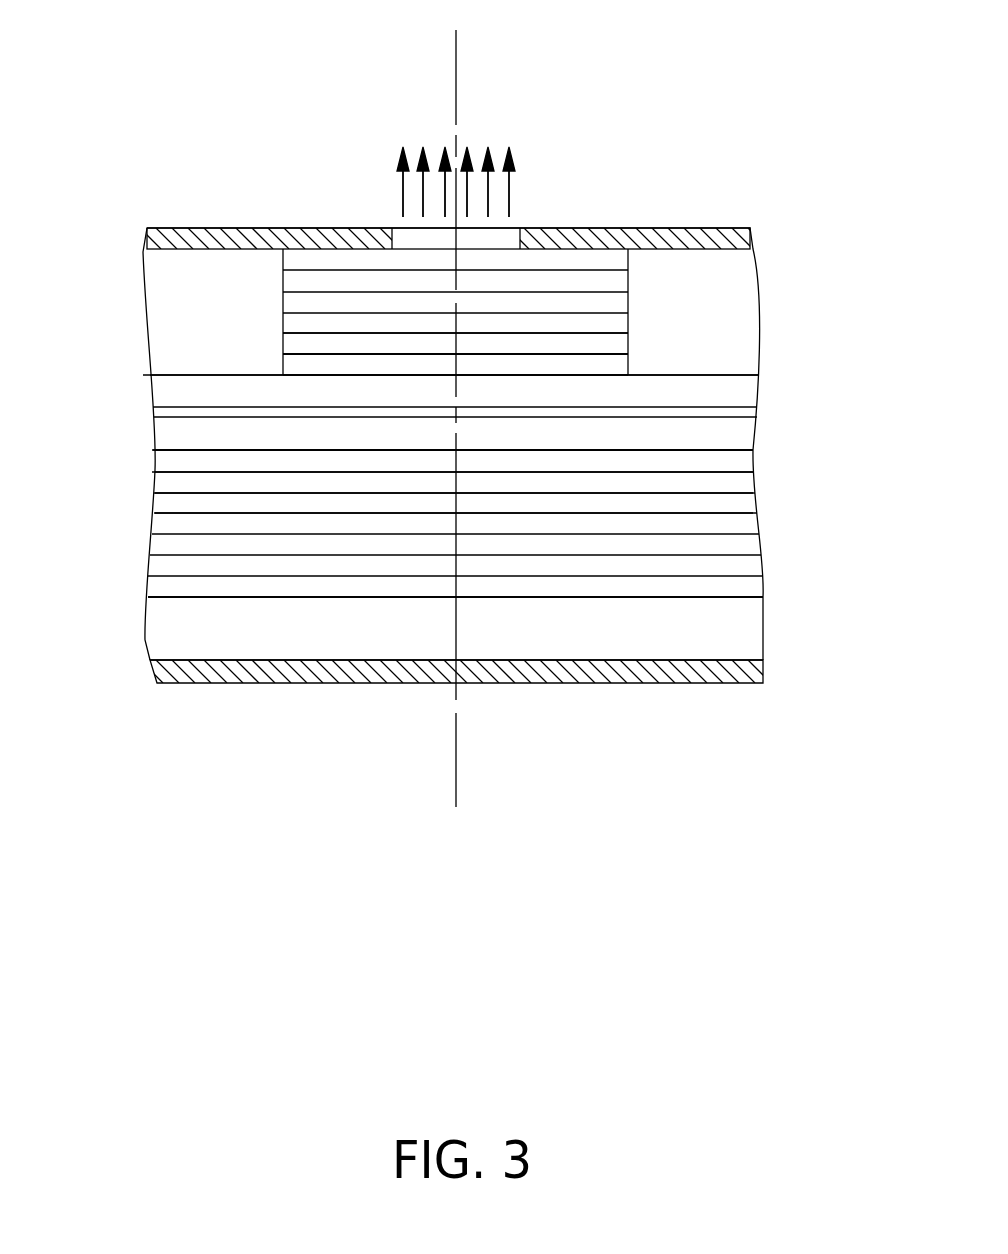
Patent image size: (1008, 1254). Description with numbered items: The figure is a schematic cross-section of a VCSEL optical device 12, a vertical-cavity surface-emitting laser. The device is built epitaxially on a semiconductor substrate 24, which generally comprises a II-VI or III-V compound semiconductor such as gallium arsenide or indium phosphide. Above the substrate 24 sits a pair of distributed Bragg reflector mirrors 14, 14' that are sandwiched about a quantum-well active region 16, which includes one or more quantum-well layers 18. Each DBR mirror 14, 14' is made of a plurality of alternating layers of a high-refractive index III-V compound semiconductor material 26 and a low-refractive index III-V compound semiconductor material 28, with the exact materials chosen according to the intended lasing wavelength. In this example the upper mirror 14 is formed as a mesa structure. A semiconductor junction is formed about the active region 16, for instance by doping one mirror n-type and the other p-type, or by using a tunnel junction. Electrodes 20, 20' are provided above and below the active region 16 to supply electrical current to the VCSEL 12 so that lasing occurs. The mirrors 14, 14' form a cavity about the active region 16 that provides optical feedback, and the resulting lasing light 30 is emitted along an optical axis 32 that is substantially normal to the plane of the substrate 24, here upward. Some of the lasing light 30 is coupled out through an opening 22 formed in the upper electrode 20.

The VCSEL optical device 12 is at (722, 762).
The distributed Bragg reflector mirror 14 is at (489, 312).
The distributed Bragg reflector mirror 14' is at (497, 523).
The quantum-well active region 16 is at (770, 378).
The quantum-well layer 18 is at (175, 412).
The electrode 20 is at (454, 213).
The electrode 20' is at (455, 703).
The opening 22 is at (392, 228).
The semiconductor substrate 24 is at (740, 620).
The high-refractive index III-V compound semiconductor material 26 is at (305, 365).
The low-refractive index III-V compound semiconductor material 28 is at (305, 343).
The lasing light 30 is at (512, 180).
The optical axis 32 is at (455, 403).